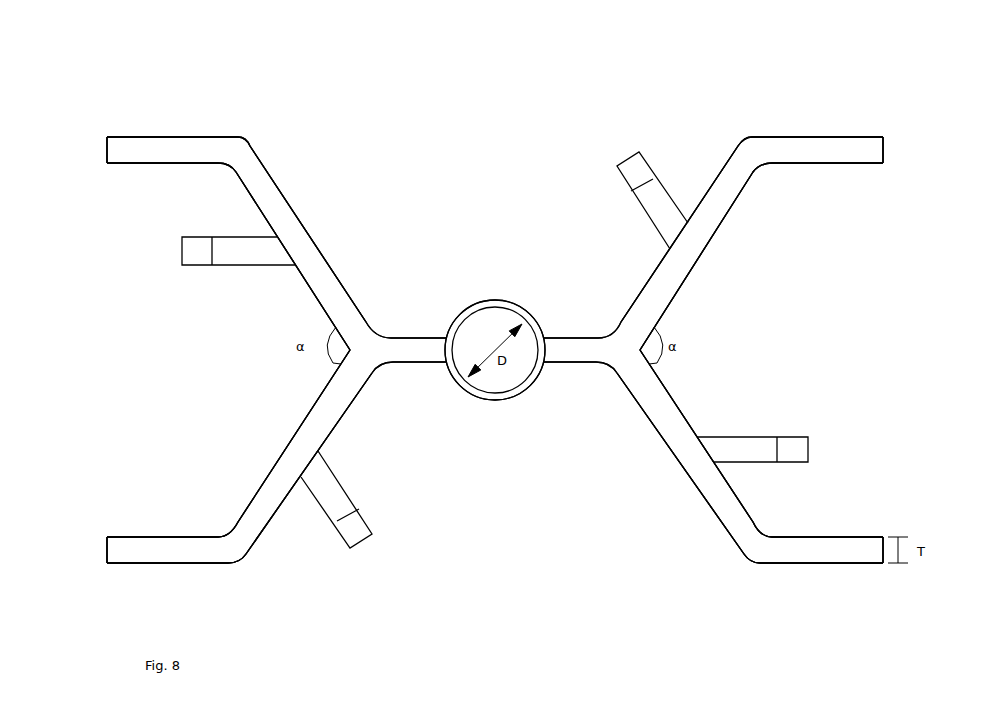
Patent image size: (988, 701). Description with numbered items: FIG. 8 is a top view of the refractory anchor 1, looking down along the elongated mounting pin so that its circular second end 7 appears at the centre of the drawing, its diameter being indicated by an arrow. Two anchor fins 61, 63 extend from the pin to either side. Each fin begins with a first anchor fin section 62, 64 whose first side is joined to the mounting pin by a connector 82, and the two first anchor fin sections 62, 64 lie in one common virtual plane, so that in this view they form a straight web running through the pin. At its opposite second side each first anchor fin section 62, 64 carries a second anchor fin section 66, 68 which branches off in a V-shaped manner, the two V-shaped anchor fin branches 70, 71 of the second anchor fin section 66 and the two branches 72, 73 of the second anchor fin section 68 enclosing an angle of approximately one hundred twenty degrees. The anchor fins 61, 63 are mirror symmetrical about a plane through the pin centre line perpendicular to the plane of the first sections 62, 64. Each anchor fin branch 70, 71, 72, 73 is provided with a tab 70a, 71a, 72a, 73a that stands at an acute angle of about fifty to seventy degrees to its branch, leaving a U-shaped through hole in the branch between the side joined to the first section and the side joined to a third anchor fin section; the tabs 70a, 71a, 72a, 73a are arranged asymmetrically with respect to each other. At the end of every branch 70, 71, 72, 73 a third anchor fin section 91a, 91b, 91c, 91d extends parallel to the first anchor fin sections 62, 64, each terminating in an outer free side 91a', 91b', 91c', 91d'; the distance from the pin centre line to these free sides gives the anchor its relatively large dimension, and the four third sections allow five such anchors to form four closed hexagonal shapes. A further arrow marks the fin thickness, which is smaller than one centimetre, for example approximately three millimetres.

The refractory anchor 1 is at (695, 73).
The second end of the elongated mounting pin 7 is at (492, 300).
The connector 82 is at (463, 390).
The anchor fin 61 is at (414, 572).
The first anchor fin section 62 is at (402, 346).
The anchor fin 63 is at (582, 519).
The first anchor fin section 64 is at (580, 352).
The second anchor fin section 66 is at (320, 182).
The second anchor fin section 68 is at (755, 256).
The anchor fin branch 70 is at (320, 423).
The tab 70a is at (337, 517).
The anchor fin branch 71 is at (312, 247).
The tab 71a is at (240, 254).
The anchor fin branch 72 is at (677, 453).
The tab 72a is at (742, 450).
The anchor fin branch 73 is at (677, 265).
The tab 73a is at (665, 198).
The third anchor fin section 91a is at (167, 573).
The outer free side of the third anchor fin section 91a' is at (87, 508).
The third anchor fin section 91b is at (172, 119).
The outer free side of the third anchor fin section 91b' is at (82, 170).
The third anchor fin section 91c is at (821, 584).
The outer free side of the third anchor fin section 91c' is at (859, 521).
The third anchor fin section 91d is at (817, 117).
The outer free side of the third anchor fin section 91d' is at (905, 133).